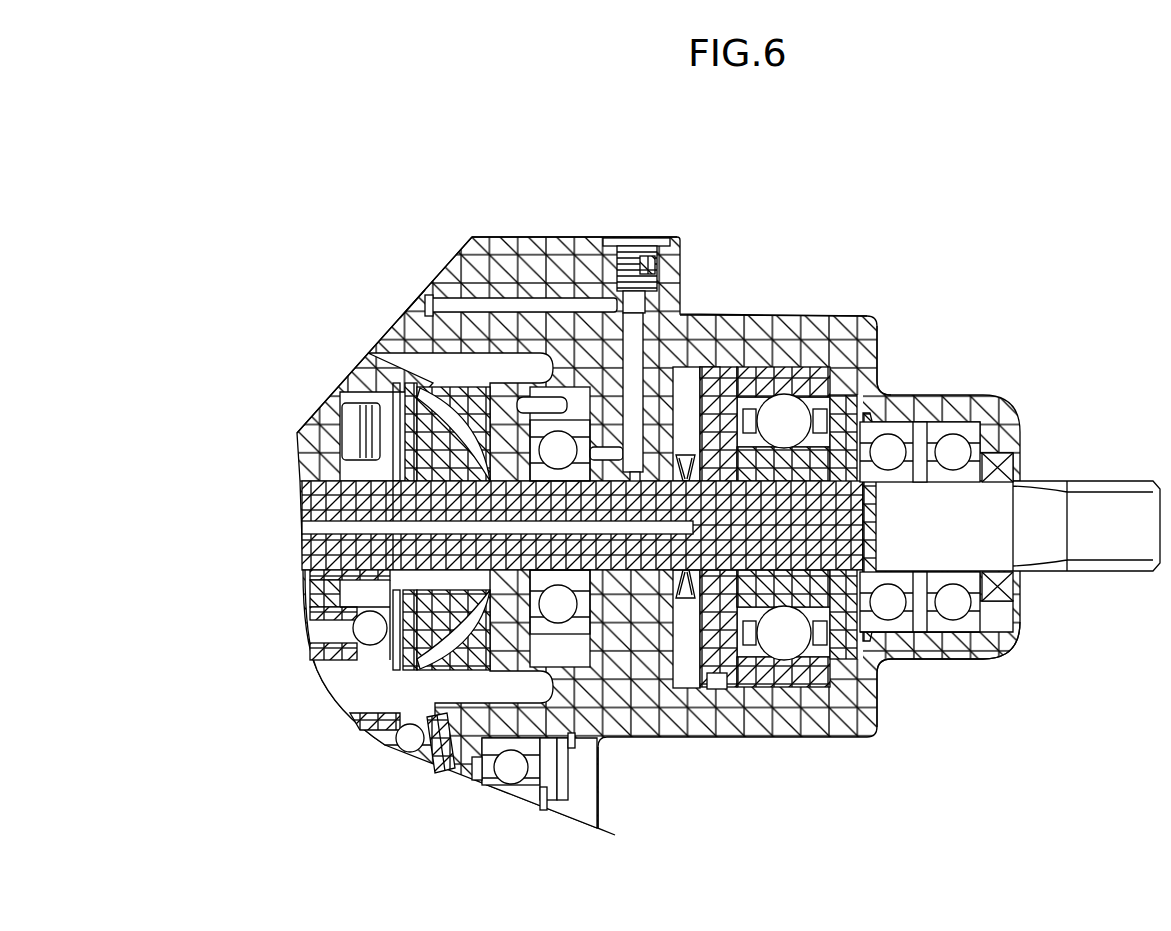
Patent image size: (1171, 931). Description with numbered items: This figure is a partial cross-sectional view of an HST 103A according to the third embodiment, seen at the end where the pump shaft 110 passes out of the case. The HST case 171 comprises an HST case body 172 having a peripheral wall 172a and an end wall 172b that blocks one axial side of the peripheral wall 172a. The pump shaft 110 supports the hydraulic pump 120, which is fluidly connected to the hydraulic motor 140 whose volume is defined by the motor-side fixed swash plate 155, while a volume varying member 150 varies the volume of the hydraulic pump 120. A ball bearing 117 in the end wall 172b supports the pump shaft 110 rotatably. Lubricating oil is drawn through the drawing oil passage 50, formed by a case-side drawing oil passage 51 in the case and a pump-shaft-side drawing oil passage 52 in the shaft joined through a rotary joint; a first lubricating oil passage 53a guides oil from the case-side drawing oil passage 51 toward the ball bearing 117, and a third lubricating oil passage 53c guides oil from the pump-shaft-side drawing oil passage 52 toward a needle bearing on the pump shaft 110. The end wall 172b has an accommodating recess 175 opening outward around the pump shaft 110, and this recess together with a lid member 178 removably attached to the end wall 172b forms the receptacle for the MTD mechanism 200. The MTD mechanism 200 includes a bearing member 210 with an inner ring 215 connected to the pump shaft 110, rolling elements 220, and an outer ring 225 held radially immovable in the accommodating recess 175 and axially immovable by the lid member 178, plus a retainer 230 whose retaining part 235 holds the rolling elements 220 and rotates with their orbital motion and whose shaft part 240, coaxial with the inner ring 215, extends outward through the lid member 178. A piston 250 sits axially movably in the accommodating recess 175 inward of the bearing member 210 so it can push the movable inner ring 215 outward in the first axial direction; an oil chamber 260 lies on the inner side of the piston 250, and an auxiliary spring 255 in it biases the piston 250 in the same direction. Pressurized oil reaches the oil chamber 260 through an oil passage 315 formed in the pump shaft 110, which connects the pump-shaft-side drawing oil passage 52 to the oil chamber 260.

The HST 103A is at (913, 215).
The HST case body 172 is at (528, 207).
The peripheral wall 172a is at (553, 250).
The end wall 172b is at (746, 325).
The HST case 171 is at (663, 190).
The lid member 178 is at (1068, 350).
The drawing oil passage 50 is at (425, 282).
The case-side drawing oil passage 51 is at (497, 302).
The first lubricating oil passage 53a is at (638, 290).
The third lubricating oil passage 53c is at (430, 530).
The pump shaft 110 is at (333, 497).
The hydraulic pump 120 is at (305, 407).
The volume varying member 150 is at (397, 377).
The pump-shaft-side drawing oil passage 52 is at (310, 583).
The hydraulic motor 140 is at (383, 737).
The motor-side fixed swash plate 155 is at (432, 775).
The ball bearing 117 is at (592, 603).
The oil passage 315 is at (650, 577).
The auxiliary spring 255 is at (688, 603).
The piston 250 is at (717, 688).
The oil chamber 260 is at (688, 372).
The MTD mechanism 200 is at (787, 358).
The accommodating recess 175 is at (805, 418).
The outer ring 225 is at (848, 338).
The rolling elements 220 is at (860, 380).
The inner ring 215 is at (843, 427).
The bearing member 210 is at (928, 524).
The retaining part 235 is at (877, 673).
The shaft part 240 is at (942, 560).
The retainer 230 is at (967, 748).